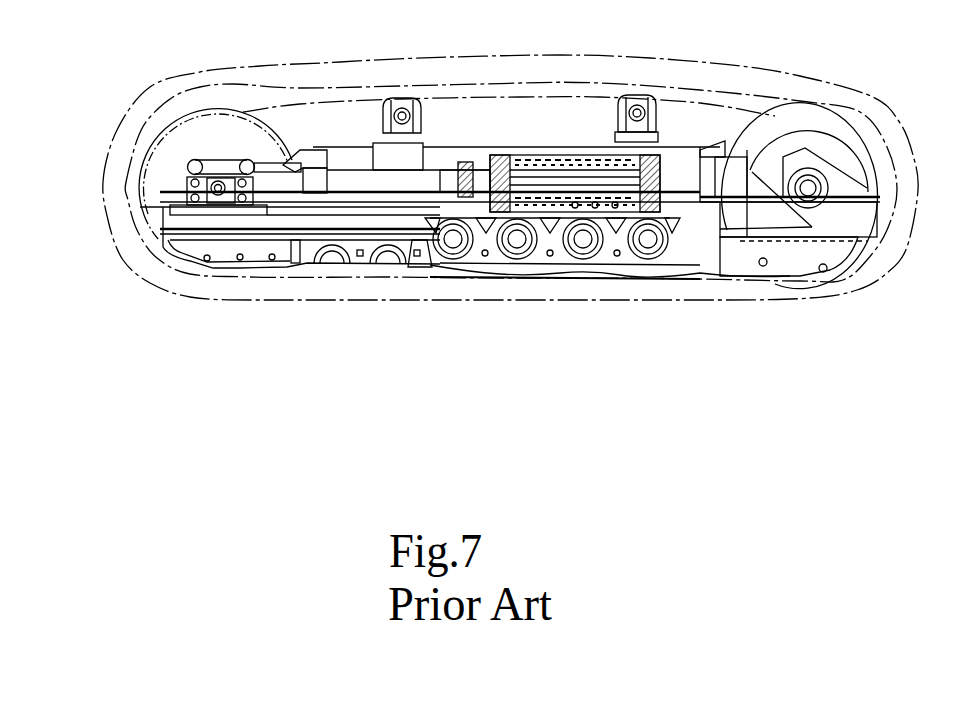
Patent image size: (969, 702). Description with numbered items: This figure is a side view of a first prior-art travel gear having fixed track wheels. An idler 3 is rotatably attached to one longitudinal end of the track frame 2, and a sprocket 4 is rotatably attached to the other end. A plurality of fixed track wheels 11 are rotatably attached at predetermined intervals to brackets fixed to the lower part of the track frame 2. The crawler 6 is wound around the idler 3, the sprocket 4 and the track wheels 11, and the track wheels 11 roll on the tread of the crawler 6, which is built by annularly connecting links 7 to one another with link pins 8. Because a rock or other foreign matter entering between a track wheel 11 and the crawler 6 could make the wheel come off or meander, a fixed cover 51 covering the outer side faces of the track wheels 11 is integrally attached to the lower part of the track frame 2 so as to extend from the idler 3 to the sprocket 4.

The track frame 2 is at (390, 220).
The idler 3 is at (250, 135).
The sprocket 4 is at (822, 133).
The crawler 6 is at (740, 67).
The link 7 is at (213, 173).
The link pin 8 is at (182, 205).
The fixed track wheel 11 is at (603, 267).
The fixed cover 51 is at (328, 266).